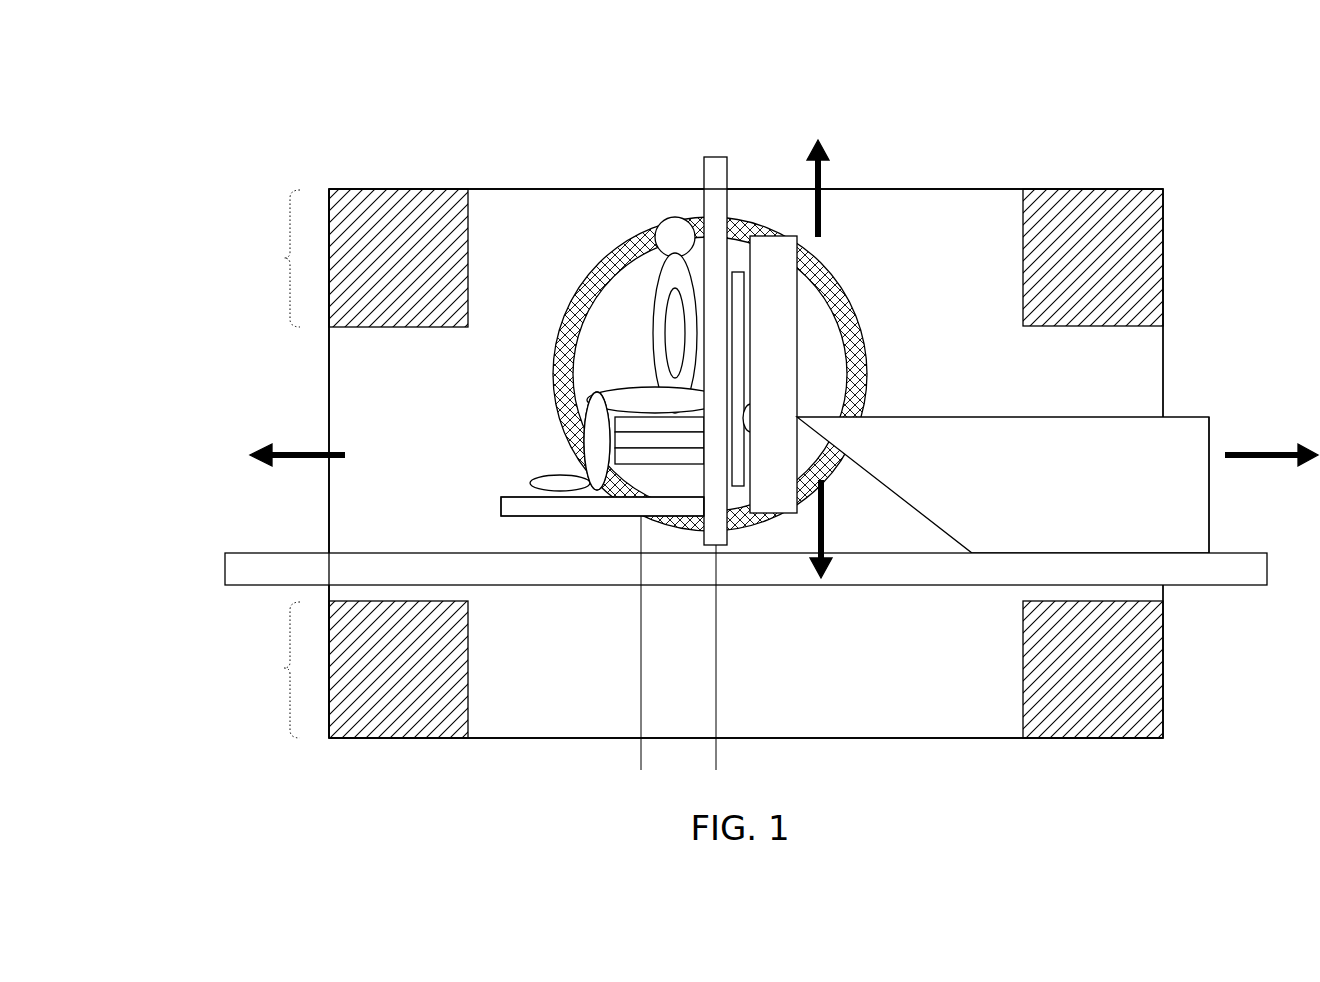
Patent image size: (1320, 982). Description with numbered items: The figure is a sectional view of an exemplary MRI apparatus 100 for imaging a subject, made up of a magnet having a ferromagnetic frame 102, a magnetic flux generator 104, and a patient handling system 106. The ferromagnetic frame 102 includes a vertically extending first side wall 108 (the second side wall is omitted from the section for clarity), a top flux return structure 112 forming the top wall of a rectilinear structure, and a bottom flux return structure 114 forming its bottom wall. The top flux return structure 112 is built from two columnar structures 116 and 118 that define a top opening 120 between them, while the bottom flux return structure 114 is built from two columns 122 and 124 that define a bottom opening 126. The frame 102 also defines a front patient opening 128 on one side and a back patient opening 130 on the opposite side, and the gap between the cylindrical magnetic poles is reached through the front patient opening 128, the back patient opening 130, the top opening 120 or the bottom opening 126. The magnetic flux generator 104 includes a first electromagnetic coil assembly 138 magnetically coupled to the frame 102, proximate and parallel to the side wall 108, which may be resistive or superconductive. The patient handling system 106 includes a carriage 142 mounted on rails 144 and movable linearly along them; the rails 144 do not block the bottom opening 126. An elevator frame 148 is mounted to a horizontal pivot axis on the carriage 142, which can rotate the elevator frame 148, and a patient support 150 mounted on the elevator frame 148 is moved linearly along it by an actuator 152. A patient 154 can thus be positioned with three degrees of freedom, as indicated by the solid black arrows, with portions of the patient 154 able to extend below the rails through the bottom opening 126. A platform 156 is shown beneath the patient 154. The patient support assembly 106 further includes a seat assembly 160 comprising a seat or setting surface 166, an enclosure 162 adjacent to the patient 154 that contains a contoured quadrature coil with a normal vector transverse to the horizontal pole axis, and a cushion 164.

The MRI apparatus 100 is at (1187, 93).
The ferromagnetic frame 102 is at (253, 178).
The magnetic flux generator 104 is at (751, 210).
The patient handling system 106 is at (474, 496).
The first side wall 108 is at (525, 188).
The top flux return structure 112 is at (270, 258).
The bottom flux return structure 114 is at (271, 670).
The columnar structure 116 is at (380, 233).
The columnar structure 118 is at (1097, 235).
The top opening 120 is at (781, 130).
The column 122 is at (380, 680).
The column 124 is at (1093, 687).
The bottom opening 126 is at (518, 775).
The front patient opening 128 is at (290, 406).
The back patient opening 130 is at (1205, 405).
The first electromagnetic coil assembly 138 is at (632, 237).
The carriage 142 is at (1213, 535).
The rails 144 is at (1222, 587).
The elevator frame 148 is at (765, 514).
The patient support 150 is at (716, 545).
The actuator 152 is at (738, 487).
The patient 154 is at (674, 217).
The platform 156 is at (641, 516).
The seat assembly 160 is at (555, 441).
The enclosure 162 is at (608, 422).
The cushion 164 is at (606, 440).
The seat or setting surface 166 is at (608, 455).